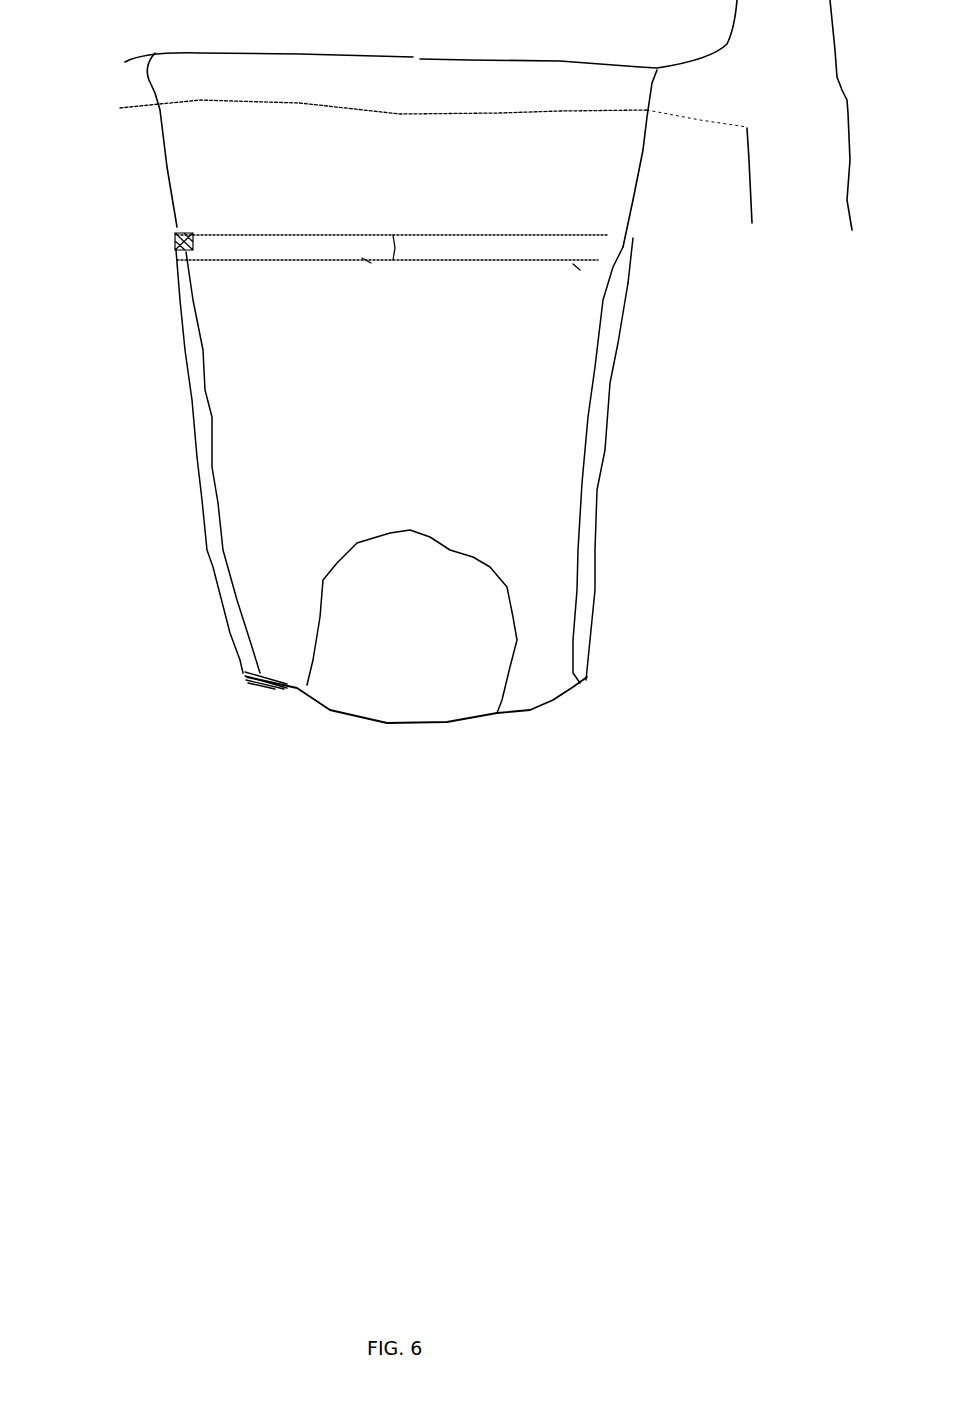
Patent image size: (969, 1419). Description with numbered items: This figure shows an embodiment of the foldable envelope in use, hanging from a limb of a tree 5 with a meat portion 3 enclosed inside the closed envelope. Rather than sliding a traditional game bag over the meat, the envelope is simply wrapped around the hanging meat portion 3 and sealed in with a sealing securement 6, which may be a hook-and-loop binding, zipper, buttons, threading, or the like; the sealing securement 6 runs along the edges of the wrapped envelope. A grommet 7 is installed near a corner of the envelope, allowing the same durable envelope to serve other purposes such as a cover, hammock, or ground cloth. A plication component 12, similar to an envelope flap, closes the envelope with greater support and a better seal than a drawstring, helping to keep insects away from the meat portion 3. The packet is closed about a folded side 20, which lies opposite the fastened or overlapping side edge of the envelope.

The meat portion 3 is at (412, 621).
The tree 5 is at (486, 123).
The sealing securement 6 is at (200, 473).
The grommet 7 is at (633, 253).
The plication component 12 is at (527, 713).
The folded side 20 is at (297, 687).